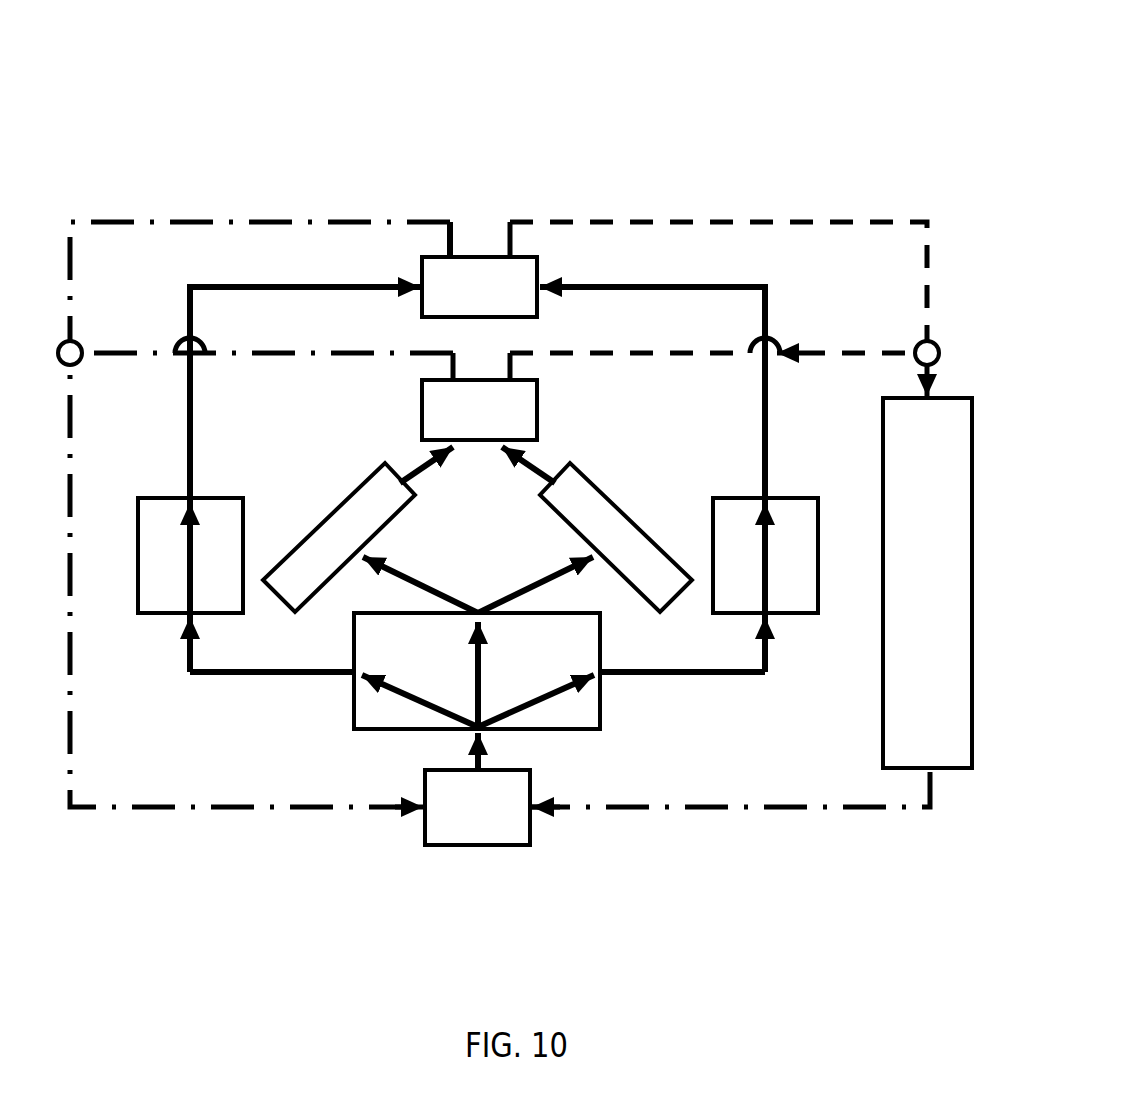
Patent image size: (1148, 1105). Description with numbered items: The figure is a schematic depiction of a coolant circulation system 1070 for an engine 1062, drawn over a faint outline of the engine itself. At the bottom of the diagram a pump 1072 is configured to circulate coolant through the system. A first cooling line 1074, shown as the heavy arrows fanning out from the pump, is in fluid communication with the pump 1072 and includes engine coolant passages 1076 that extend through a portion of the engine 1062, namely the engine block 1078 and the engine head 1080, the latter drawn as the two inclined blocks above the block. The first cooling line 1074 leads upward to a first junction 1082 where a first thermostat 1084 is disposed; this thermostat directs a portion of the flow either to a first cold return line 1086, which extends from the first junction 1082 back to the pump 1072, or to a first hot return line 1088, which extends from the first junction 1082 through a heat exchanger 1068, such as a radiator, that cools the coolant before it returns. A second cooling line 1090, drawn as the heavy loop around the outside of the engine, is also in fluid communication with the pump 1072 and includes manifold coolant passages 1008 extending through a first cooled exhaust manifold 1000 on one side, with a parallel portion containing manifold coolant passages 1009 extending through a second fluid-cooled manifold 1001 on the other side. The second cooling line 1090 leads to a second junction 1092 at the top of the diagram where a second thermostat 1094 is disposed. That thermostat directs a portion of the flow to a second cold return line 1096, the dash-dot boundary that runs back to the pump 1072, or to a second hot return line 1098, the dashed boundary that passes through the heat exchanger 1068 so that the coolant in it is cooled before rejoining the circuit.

The coolant circulation system 1070 is at (718, 98).
The second cold return line 1096 is at (263, 220).
The second hot return line 1098 is at (640, 220).
The second junction 1092 is at (474, 240).
The second thermostat 1094 is at (479, 287).
The first junction 1082 is at (407, 395).
The first thermostat 1084 is at (479, 410).
The first cold return line 1086 is at (265, 350).
The first hot return line 1088 is at (677, 350).
The second cooling line 1090 is at (182, 300).
The first cooling line 1074 is at (410, 457).
The engine head 1080 is at (298, 582).
The engine coolant passages 1076 is at (481, 652).
The engine block 1078 is at (577, 713).
The pump 1072 is at (477, 789).
The heat exchanger 1068 is at (927, 583).
The manifold coolant passages 1008 is at (187, 540).
The manifold coolant passages 1009 is at (767, 542).
The first cooled exhaust manifold 1000 is at (138, 555).
The second fluid-cooled manifold 1001 is at (822, 577).
The engine 1062 is at (672, 768).